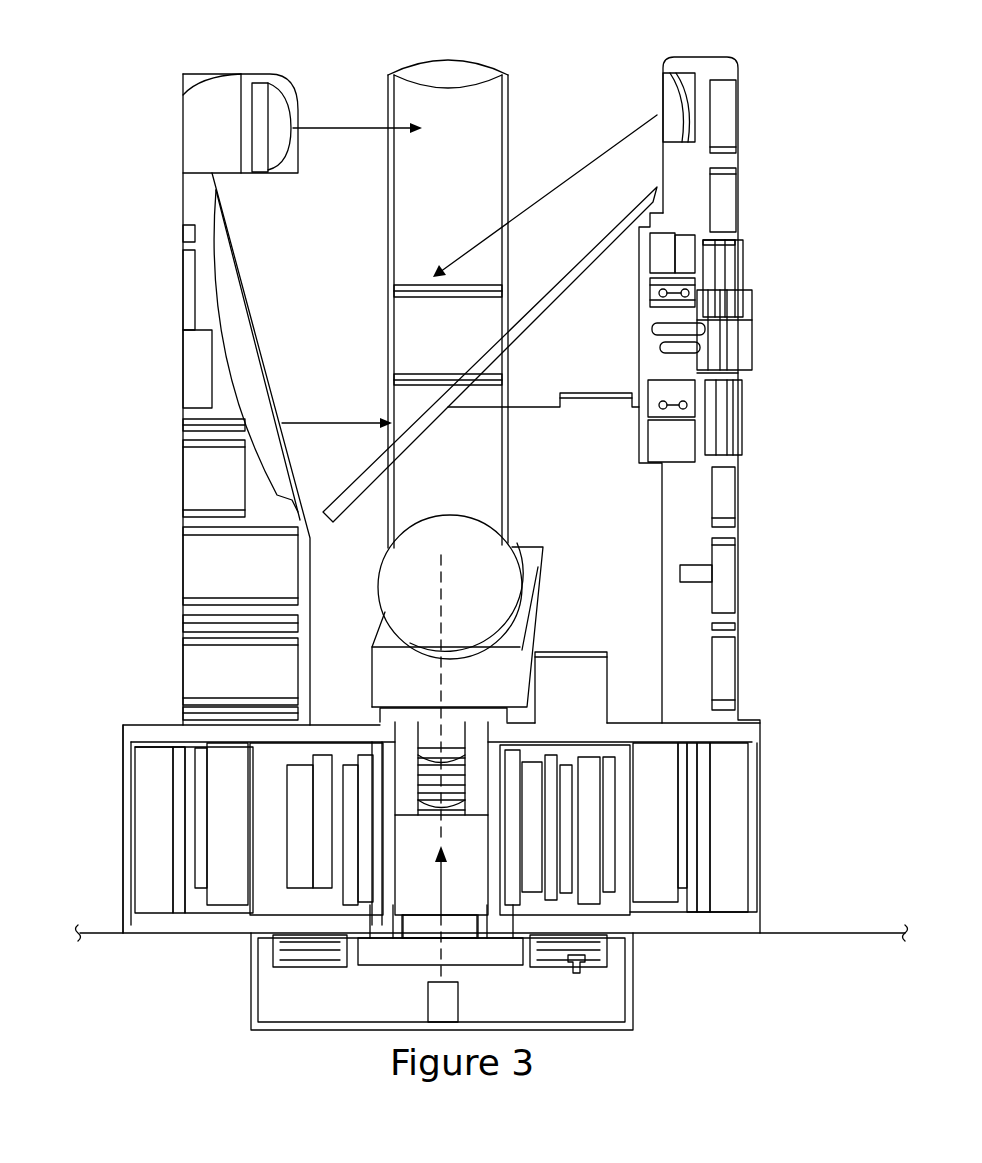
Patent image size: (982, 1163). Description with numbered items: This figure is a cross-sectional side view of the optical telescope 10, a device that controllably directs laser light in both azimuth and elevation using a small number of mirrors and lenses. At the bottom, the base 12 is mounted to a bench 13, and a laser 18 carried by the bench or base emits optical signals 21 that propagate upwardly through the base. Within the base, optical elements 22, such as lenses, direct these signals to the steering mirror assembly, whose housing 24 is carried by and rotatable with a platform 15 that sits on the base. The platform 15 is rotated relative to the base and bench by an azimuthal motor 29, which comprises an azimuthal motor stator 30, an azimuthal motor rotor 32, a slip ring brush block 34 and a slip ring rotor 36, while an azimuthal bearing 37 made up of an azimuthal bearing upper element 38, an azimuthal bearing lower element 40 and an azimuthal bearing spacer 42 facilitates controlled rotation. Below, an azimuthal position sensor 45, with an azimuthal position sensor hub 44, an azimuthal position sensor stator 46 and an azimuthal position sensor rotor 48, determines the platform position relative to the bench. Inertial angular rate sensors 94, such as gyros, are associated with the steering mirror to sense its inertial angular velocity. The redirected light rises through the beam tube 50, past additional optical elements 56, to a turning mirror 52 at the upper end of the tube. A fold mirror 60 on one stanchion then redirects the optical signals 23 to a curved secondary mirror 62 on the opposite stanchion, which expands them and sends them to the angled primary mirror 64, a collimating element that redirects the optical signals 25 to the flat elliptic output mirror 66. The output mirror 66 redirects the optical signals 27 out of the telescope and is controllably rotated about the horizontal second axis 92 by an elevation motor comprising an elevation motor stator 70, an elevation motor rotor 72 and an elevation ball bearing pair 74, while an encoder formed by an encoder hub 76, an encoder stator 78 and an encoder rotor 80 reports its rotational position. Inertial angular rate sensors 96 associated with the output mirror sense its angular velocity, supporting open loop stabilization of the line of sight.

The optical telescope 10 is at (125, 165).
The base 12 is at (735, 818).
The bench 13 is at (135, 960).
The platform 15 is at (643, 730).
The laser 18 is at (428, 1003).
The optical signals 21 is at (445, 888).
The optical elements 22 is at (420, 783).
The optical signals 23 is at (327, 132).
The housing 24 is at (523, 545).
The optical signals 25 is at (563, 180).
The optical signals 27 is at (333, 420).
The azimuthal motor 29 is at (121, 767).
The azimuthal motor stator 30 is at (303, 745).
The azimuthal motor rotor 32 is at (322, 765).
The slip ring brush block 34 is at (180, 793).
The slip ring rotor 36 is at (218, 845).
The azimuthal bearing 37 is at (548, 843).
The azimuthal bearing upper element 38 is at (600, 762).
The azimuthal bearing lower element 40 is at (560, 890).
The azimuthal bearing spacer 42 is at (553, 822).
The azimuthal position sensor hub 44 is at (610, 947).
The azimuthal position sensor 45 is at (558, 968).
The azimuthal position sensor stator 46 is at (607, 962).
The azimuthal position sensor rotor 48 is at (293, 942).
The beam tube 50 is at (510, 115).
The turning mirror 52 is at (473, 62).
The optical elements 56 is at (422, 287).
The fold mirror 60 is at (282, 112).
The secondary mirror 62 is at (670, 108).
The primary mirror 64 is at (250, 303).
The output mirror 66 is at (473, 362).
The elevation motor stator 70 is at (657, 262).
The elevation motor rotor 72 is at (650, 242).
The elevation ball bearing pair 74 is at (653, 298).
The encoder hub 76 is at (738, 328).
The encoder stator 78 is at (738, 443).
The encoder rotor 80 is at (717, 417).
The second axis 92 is at (740, 345).
The inertial angular rate sensors 94 is at (580, 650).
The inertial angular rate sensors 96 is at (590, 403).